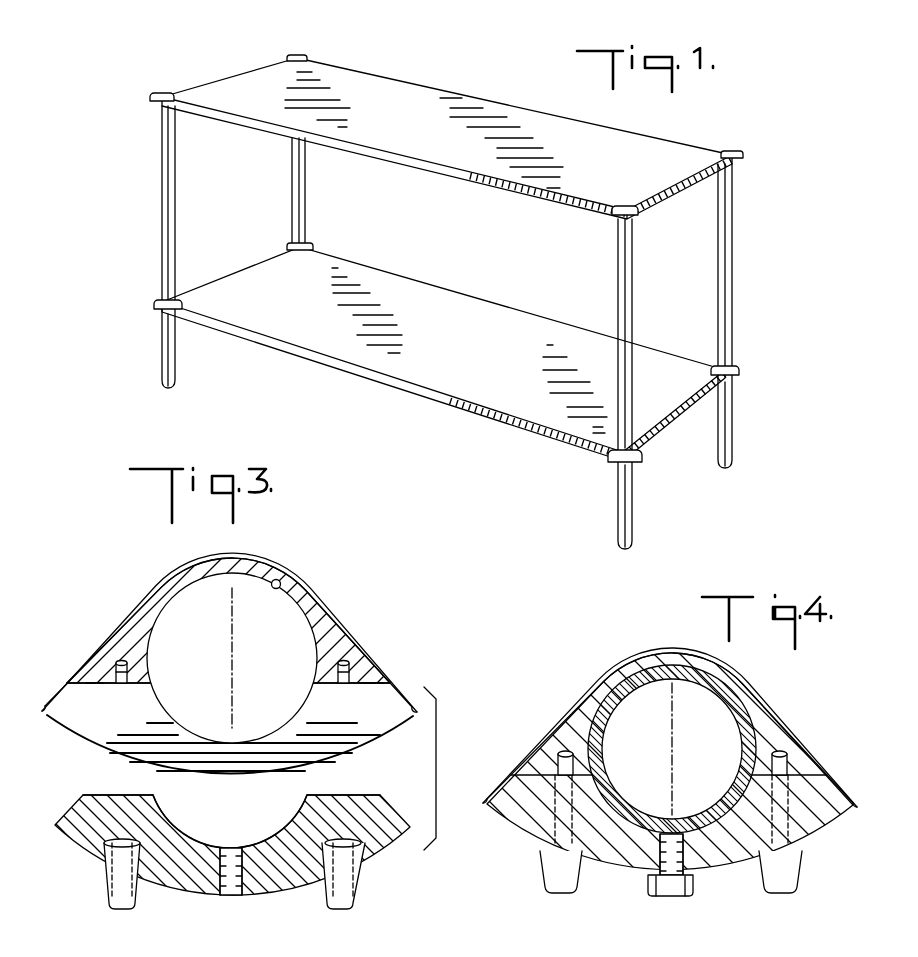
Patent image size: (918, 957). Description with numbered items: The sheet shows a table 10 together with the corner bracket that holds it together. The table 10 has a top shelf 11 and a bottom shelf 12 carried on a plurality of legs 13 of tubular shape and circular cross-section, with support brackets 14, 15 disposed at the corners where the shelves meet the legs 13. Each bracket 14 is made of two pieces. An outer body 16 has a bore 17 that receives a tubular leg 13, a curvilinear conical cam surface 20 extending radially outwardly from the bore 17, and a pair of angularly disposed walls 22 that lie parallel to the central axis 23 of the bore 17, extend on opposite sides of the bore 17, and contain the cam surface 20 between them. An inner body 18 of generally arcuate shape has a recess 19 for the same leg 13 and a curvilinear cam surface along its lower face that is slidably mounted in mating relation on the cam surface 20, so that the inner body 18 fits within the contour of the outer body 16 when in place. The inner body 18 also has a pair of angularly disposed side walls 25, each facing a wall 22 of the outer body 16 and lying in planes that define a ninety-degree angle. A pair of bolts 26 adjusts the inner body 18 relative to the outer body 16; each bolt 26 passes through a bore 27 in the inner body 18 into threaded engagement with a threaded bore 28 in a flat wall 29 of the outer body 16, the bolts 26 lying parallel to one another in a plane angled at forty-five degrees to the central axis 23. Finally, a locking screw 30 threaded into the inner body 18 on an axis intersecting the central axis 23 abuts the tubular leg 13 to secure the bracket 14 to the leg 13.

In FIG. 1, the table 10 is at (484, 88).
In FIG. 1, the top shelf 11 is at (517, 117).
In FIG. 1, the bottom shelf 12 is at (463, 308).
In FIG. 1, the tubular leg 13 is at (306, 194).
In FIG. 4, the tubular leg 13 is at (616, 708).
In FIG. 1, the support bracket 14 is at (312, 247).
In FIG. 3, the support bracket 14 is at (240, 654).
In FIG. 4, the support bracket 14 is at (667, 773).
In FIG. 1, the support bracket 15 is at (305, 56).
In FIG. 3, the outer body 16 is at (240, 632).
In FIG. 4, the outer body 16 is at (667, 766).
In FIG. 3, the bore 17 is at (277, 578).
In FIG. 3, the inner body 18 is at (239, 854).
In FIG. 4, the inner body 18 is at (630, 876).
In FIG. 3, the recess 19 is at (264, 838).
In FIG. 3, the curvilinear conical cam surface 20 is at (377, 731).
In FIG. 3, the angularly disposed wall 22 is at (417, 673).
In FIG. 4, the angularly disposed wall 22 is at (494, 798).
In FIG. 3, the central axis 23 is at (236, 663).
In FIG. 4, the central axis 23 is at (676, 755).
In FIG. 3, the side wall 25 is at (85, 804).
In FIG. 4, the bolt 26 is at (561, 894).
In FIG. 3, the bore 27 is at (122, 900).
In FIG. 3, the threaded bore 28 is at (121, 688).
In FIG. 3, the flat wall 29 is at (95, 686).
In FIG. 4, the locking screw 30 is at (677, 893).